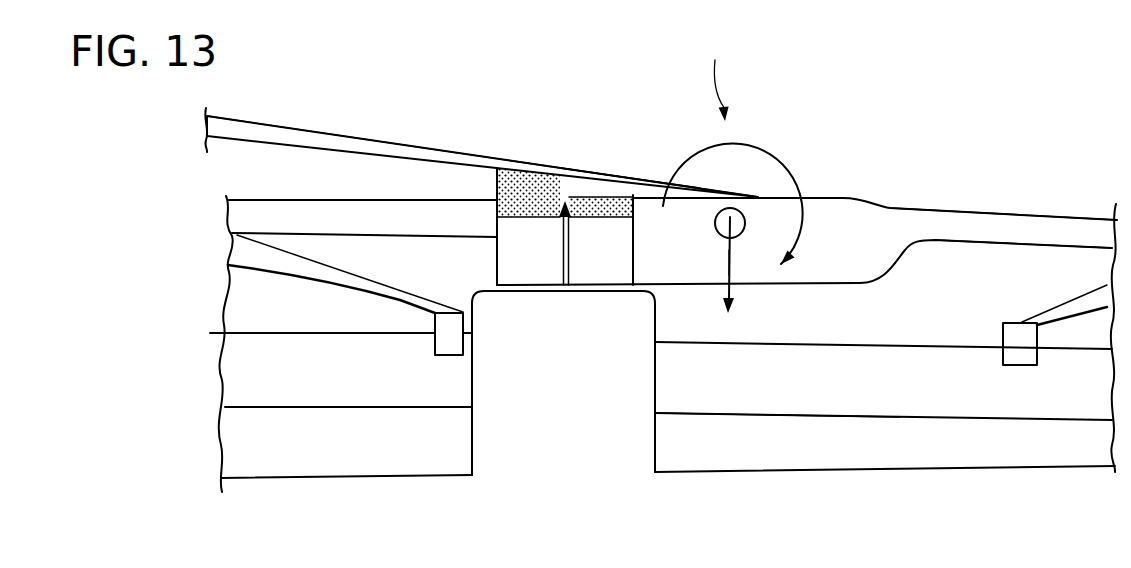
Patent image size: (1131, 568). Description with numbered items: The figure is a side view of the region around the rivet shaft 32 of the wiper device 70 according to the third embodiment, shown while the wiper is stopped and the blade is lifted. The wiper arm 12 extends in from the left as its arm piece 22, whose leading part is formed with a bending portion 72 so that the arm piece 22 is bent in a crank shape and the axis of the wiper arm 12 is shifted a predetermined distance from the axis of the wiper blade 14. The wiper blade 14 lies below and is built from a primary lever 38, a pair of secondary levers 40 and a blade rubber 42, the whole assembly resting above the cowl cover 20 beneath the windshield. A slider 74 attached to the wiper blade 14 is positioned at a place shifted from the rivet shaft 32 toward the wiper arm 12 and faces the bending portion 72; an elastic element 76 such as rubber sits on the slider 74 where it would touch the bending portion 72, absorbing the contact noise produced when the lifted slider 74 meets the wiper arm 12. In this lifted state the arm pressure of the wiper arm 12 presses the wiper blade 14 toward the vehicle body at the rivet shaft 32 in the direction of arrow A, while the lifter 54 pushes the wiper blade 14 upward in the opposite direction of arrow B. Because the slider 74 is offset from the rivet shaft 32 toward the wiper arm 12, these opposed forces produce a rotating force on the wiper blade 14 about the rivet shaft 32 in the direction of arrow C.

The wiper arm 12 is at (352, 121).
The arm piece 22 is at (402, 143).
The elastic element 76 is at (523, 193).
The bending portion 72 is at (597, 172).
The slider 74 is at (625, 196).
The wiper device 70 is at (717, 76).
The wiper blade 14 is at (895, 180).
The primary lever 38 is at (1062, 222).
The secondary levers 40 is at (407, 300).
The cowl cover 20 is at (354, 476).
The blade rubber 42 is at (716, 392).
The lifter 54 is at (597, 446).
The rivet shaft 32 is at (741, 216).
The arrow A is at (727, 262).
The arrow B is at (550, 265).
The arrow C is at (768, 148).